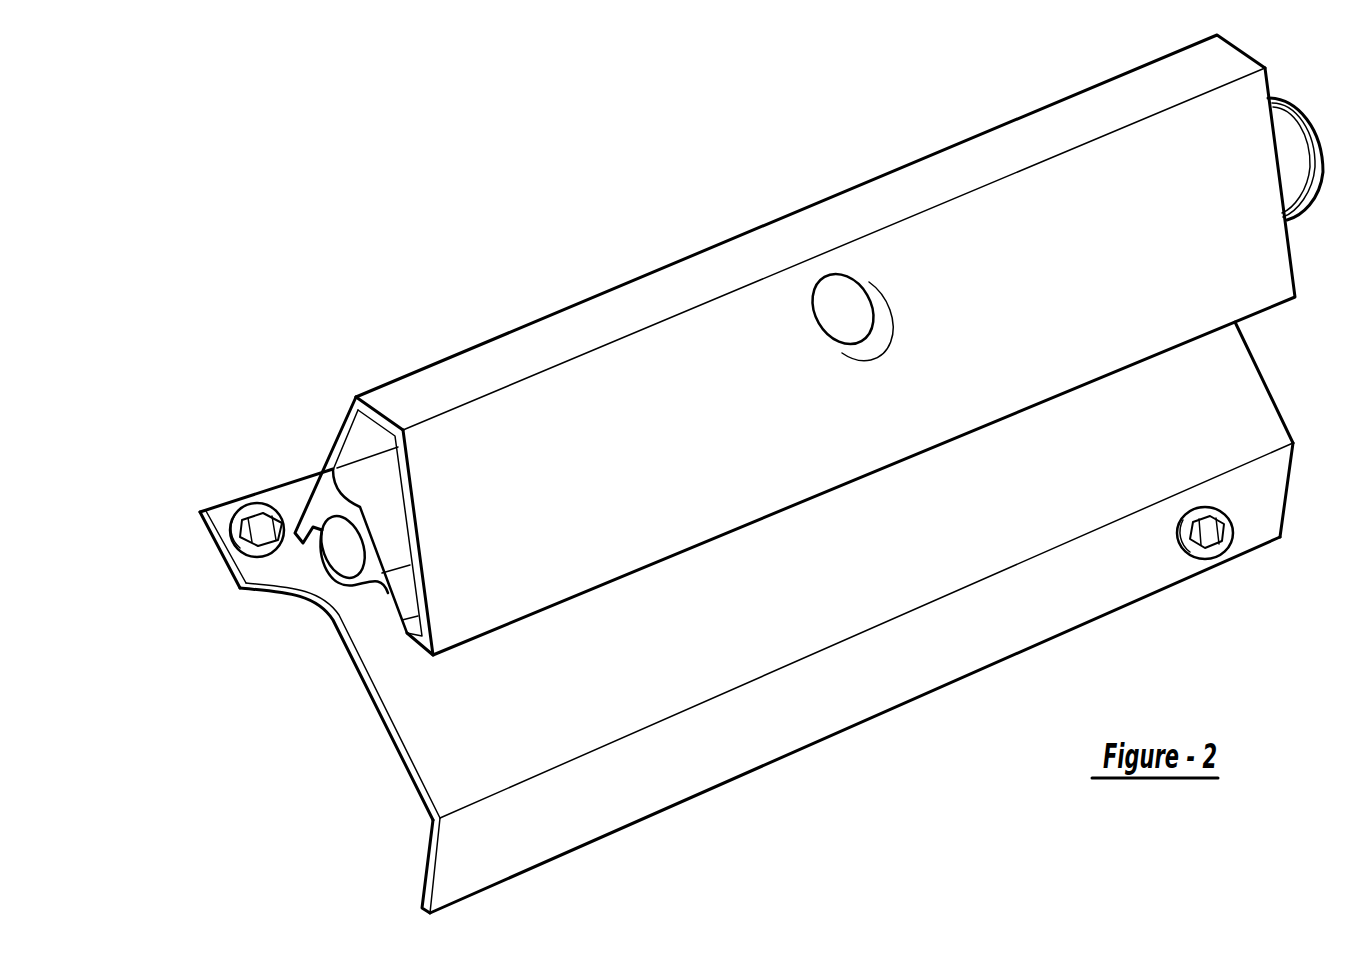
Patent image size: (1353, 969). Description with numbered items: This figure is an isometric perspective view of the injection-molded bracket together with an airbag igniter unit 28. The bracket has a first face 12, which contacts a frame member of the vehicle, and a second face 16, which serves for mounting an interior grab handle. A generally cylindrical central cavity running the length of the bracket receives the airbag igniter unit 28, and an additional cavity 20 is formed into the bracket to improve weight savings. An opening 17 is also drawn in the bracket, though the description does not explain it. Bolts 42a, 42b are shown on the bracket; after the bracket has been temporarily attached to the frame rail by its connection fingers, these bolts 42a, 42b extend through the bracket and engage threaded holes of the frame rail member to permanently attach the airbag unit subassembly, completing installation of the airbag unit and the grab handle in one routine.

The first face 12 is at (393, 771).
The second face 16 is at (655, 408).
The hole in clamp block 17 is at (837, 312).
The additional cavity 20 is at (388, 487).
The airbag igniter unit 28 is at (382, 722).
The bolt 42a is at (267, 523).
The bolt 42b is at (1215, 543).